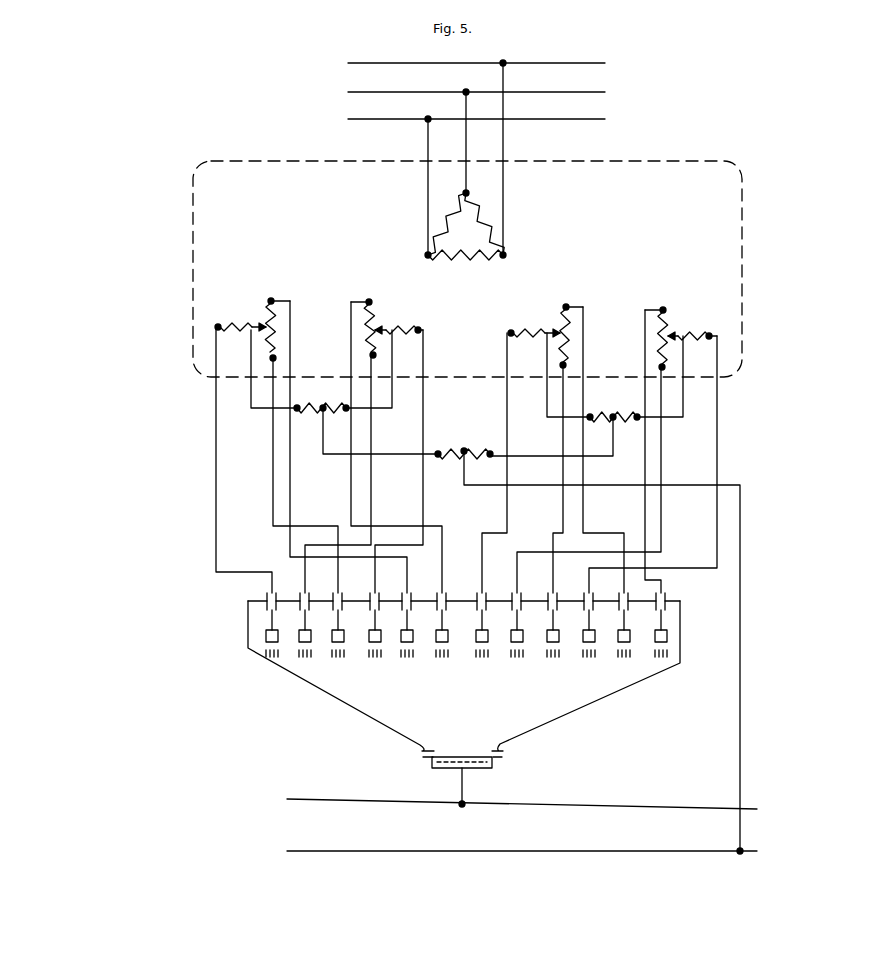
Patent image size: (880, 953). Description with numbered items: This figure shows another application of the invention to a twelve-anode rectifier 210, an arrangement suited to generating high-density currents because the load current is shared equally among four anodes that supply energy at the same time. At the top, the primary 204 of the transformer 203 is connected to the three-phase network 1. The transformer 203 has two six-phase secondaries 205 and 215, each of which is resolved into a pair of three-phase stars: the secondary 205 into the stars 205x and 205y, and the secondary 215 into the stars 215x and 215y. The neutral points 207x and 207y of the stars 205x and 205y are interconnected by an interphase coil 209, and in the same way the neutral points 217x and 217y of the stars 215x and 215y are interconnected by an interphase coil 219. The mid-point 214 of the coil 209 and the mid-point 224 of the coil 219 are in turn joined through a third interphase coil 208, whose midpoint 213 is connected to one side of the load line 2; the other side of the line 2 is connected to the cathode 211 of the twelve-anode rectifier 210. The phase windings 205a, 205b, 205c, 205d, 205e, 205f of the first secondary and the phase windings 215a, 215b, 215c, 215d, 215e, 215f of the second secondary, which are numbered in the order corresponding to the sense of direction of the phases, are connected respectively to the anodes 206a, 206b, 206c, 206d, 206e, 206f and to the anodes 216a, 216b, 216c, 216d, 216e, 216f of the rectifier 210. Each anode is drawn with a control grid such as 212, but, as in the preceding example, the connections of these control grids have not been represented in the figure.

The network 1 is at (612, 63).
The line 2 is at (765, 805).
The transformer 203 is at (742, 248).
The primary 204 is at (487, 224).
The six-phase secondary 205 is at (373, 279).
The phase winding 205a is at (257, 329).
The phase winding 205b is at (372, 352).
The phase winding 205c is at (268, 350).
The phase winding 205d is at (393, 325).
The phase winding 205e is at (275, 316).
The phase winding 205f is at (374, 312).
The three-phase star 205x is at (259, 305).
The three-phase star 205y is at (418, 312).
The neutral point 207x is at (257, 325).
The neutral point 207y is at (385, 332).
The mid-point 214 is at (321, 371).
The interphase coil 209 is at (365, 429).
The midpoint 213 is at (464, 445).
The third interphase coil 208 is at (459, 457).
The six-phase secondary 215 is at (668, 285).
The phase winding 215a is at (513, 337).
The phase winding 215b is at (660, 350).
The phase winding 215c is at (560, 362).
The phase winding 215d is at (709, 333).
The phase winding 215e is at (566, 318).
The phase winding 215f is at (671, 322).
The three-phase star 215x is at (547, 322).
The three-phase star 215y is at (680, 327).
The neutral point 217x is at (545, 332).
The neutral point 217y is at (676, 337).
The mid-point 224 is at (615, 377).
The interphase coil 219 is at (616, 422).
The anode 206a is at (278, 637).
The anode 206b is at (311, 637).
The anode 206c is at (344, 637).
The anode 206d is at (385, 508).
The anode 206e is at (413, 637).
The anode 206f is at (448, 637).
The anode 216a is at (488, 637).
The anode 216b is at (523, 637).
The anode 216c is at (559, 637).
The anode 216d is at (595, 637).
The anode 216e is at (630, 637).
The anode 216f is at (667, 637).
The control grid 212 is at (378, 658).
The twelve-anode rectifier 210 is at (362, 712).
The cathode 211 is at (437, 770).